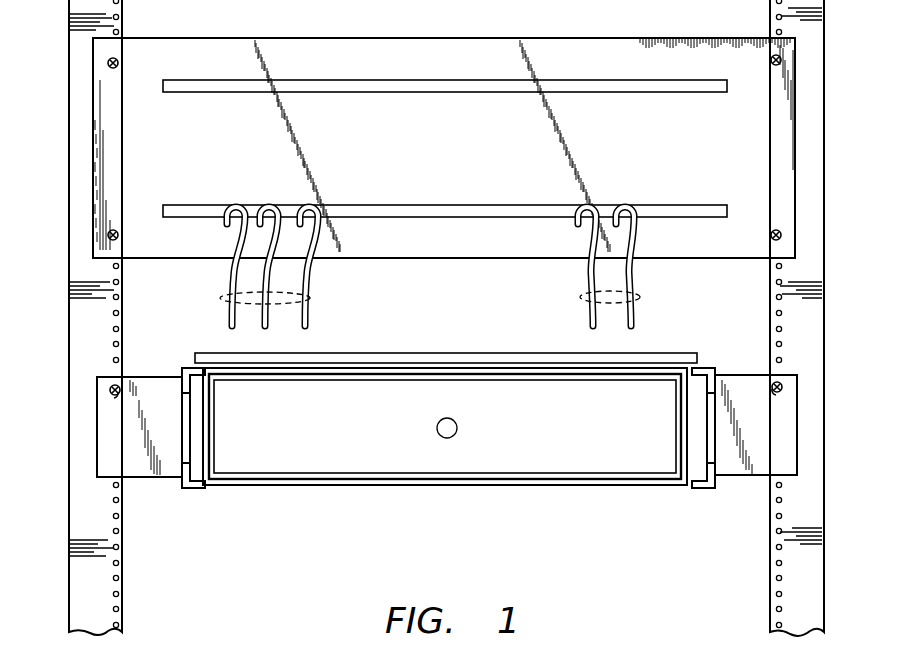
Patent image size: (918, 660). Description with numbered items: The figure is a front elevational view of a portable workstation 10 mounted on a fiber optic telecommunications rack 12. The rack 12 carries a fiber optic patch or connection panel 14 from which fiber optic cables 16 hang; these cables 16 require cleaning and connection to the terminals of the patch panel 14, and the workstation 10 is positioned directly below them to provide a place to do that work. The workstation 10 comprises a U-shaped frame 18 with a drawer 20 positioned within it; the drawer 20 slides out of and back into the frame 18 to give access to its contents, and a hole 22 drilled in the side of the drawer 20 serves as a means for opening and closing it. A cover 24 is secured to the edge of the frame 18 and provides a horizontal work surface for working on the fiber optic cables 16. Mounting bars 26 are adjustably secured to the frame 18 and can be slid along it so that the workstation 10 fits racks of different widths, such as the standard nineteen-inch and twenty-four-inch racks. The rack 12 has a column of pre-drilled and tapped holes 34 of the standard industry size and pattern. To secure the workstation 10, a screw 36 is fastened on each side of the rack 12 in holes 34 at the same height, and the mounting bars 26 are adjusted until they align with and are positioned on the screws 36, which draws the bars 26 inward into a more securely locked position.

The portable workstation 10 is at (533, 527).
The fiber optic rack 12 is at (70, 583).
The fiber optic patch panel 14 is at (459, 160).
The fiber optic cables 16 is at (221, 300).
The U-shaped frame 18 is at (209, 490).
The drawer 20 is at (582, 441).
The hole 22 is at (438, 432).
The cover 24 is at (445, 353).
The mounting bars 26 is at (159, 376).
The holes 34 is at (119, 595).
The screw 36 is at (110, 388).